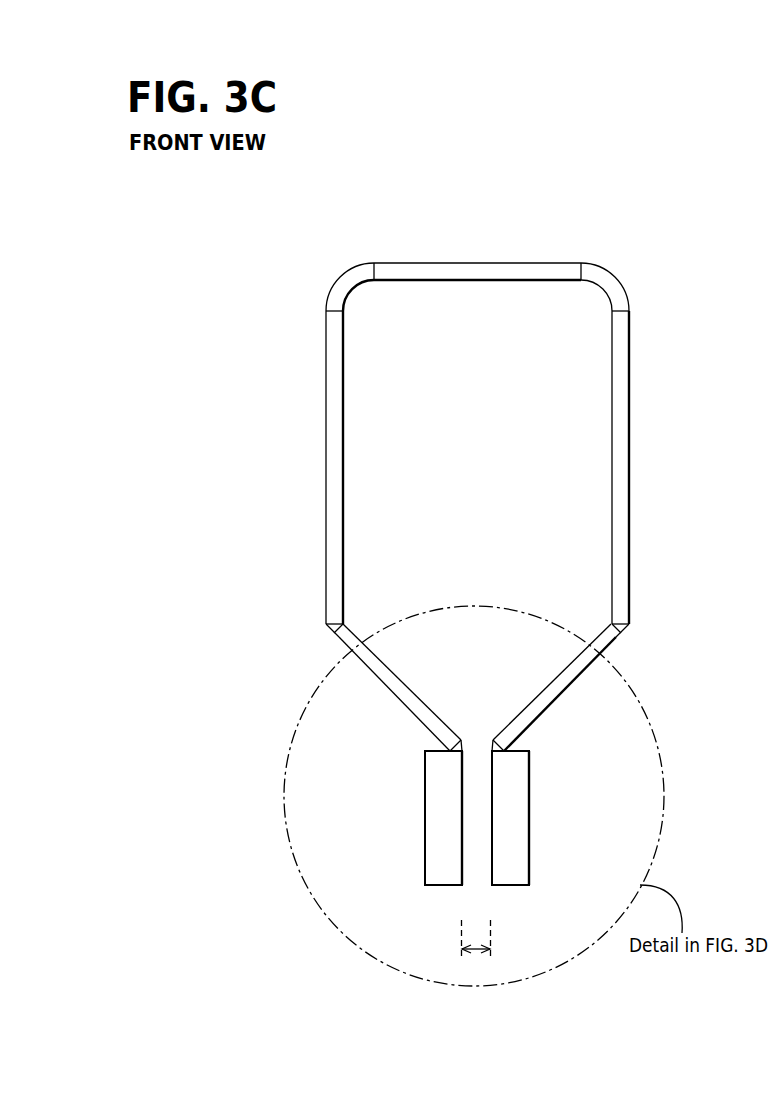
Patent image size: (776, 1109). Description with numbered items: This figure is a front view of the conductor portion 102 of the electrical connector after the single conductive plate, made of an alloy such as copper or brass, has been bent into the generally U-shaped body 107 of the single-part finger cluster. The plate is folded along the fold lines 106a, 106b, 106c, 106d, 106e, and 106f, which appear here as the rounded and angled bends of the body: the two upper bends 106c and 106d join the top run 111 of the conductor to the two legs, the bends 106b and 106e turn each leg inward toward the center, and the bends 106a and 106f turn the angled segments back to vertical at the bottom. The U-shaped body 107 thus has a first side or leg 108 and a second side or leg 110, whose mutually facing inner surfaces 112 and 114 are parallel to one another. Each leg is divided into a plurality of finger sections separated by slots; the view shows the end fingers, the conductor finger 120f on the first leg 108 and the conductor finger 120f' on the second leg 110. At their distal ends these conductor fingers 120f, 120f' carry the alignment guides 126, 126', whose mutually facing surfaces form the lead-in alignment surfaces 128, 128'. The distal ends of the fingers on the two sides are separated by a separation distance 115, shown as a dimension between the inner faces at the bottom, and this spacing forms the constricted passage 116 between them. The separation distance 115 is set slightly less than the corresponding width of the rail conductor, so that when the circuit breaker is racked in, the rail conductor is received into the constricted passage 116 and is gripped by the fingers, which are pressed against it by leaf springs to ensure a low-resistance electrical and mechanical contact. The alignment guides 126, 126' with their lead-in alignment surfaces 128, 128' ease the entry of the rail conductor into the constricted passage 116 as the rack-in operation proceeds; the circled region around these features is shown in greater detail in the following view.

The conductor portion 102 is at (525, 118).
The U-shaped body 107 is at (170, 330).
The first side or leg 108 is at (682, 505).
The second side or leg 110 is at (243, 505).
The top segment 111 is at (493, 259).
The mutually facing parallel surface 112 is at (610, 482).
The mutually facing parallel surface 114 is at (347, 475).
The separation distance 115 is at (477, 950).
The constricted passage 116 is at (476, 888).
The fold line 106a is at (420, 738).
The fold line 106b is at (320, 633).
The fold line 106c is at (345, 271).
The fold line 106d is at (612, 273).
The fold line 106e is at (635, 633).
The fold line 106f is at (537, 739).
The conductor finger 120f is at (565, 687).
The conductor finger 120f' is at (385, 687).
The alignment guide 126 is at (557, 818).
The alignment guide 126' is at (397, 818).
The lead-in alignment surface 128 is at (551, 818).
The lead-in alignment surface 128' is at (411, 818).